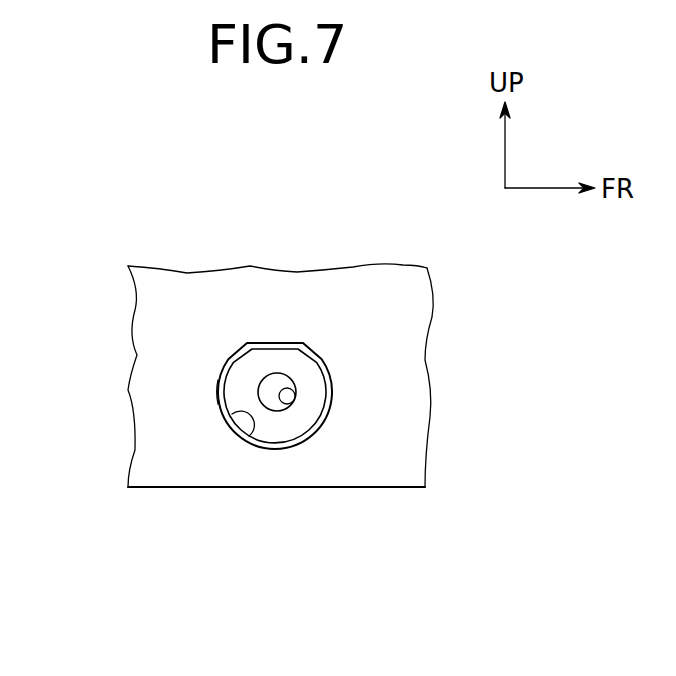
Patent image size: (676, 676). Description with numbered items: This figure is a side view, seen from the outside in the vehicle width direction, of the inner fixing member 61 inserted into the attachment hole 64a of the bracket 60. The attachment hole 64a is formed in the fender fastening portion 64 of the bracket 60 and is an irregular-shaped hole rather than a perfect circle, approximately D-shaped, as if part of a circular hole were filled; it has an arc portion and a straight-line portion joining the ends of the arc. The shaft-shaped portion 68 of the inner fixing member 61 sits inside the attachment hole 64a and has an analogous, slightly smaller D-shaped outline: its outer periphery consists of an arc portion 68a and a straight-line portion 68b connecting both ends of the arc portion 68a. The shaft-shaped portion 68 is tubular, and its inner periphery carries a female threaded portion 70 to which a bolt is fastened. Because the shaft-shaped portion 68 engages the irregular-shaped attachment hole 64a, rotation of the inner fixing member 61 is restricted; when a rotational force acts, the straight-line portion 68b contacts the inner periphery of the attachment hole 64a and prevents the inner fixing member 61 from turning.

The bracket 60 is at (343, 488).
The inner fixing member 61 is at (331, 391).
The fender fastening portion 64 is at (312, 475).
The attachment hole 64a is at (248, 440).
The shaft-shaped portion 68 is at (317, 381).
The arc portion 68a is at (218, 393).
The straight-line portion 68b is at (276, 343).
The female threaded portion 70 is at (290, 405).